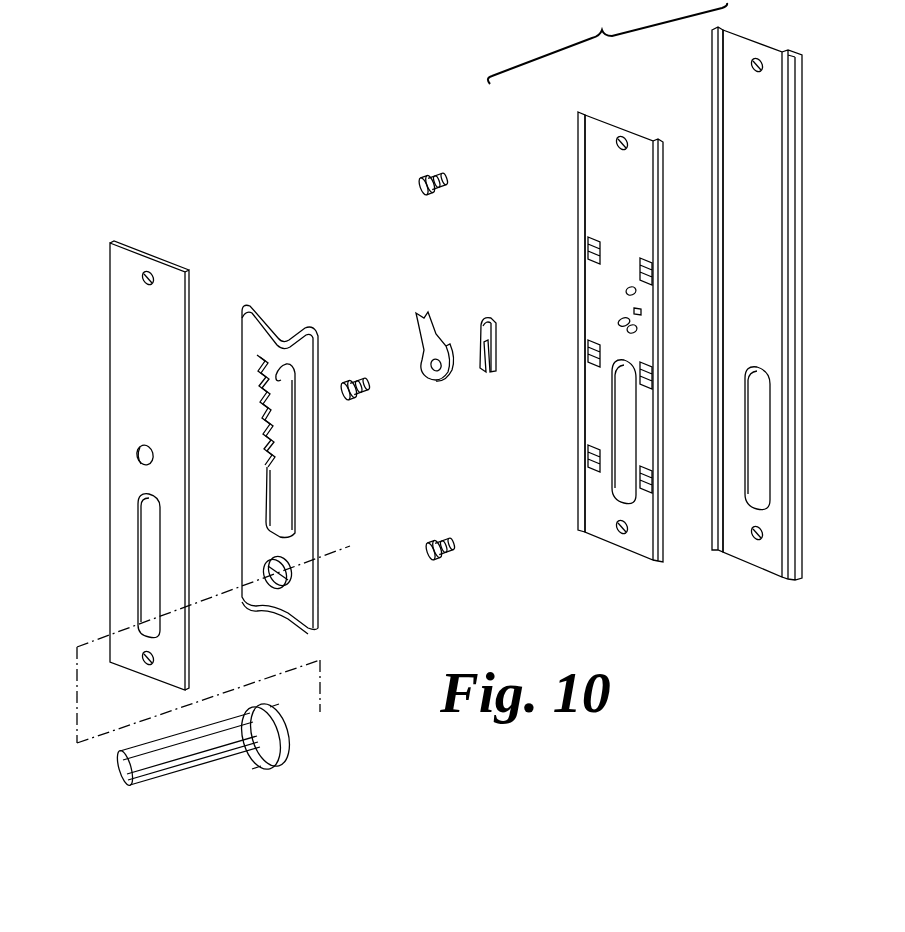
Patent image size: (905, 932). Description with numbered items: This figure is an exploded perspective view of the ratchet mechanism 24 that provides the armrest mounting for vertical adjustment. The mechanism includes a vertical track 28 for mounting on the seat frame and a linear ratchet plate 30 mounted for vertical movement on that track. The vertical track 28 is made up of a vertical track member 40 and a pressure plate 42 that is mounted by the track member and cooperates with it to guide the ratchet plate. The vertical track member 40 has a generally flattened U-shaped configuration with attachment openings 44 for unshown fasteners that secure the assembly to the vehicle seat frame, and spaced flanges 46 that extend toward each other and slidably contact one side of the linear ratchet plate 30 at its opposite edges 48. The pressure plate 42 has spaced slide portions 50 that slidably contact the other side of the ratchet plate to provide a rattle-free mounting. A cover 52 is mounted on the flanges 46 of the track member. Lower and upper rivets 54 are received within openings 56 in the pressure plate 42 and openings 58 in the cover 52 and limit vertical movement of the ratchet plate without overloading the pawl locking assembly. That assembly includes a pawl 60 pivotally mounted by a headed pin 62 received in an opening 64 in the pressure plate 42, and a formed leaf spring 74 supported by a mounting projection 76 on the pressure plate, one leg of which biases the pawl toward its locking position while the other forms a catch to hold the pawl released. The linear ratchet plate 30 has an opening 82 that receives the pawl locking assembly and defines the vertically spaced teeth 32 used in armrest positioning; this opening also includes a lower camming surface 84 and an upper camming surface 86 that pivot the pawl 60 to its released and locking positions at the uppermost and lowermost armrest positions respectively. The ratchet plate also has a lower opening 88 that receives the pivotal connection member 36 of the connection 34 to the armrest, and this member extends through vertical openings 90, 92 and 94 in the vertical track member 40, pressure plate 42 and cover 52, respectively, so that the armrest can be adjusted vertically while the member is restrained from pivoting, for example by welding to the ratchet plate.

The ratchet mechanism 24 is at (316, 150).
The vertical track 28 is at (607, 43).
The linear ratchet plate 30 is at (277, 436).
The vertically spaced teeth 32 is at (262, 411).
The connection 34 is at (224, 773).
The pivotal connection member 36 is at (192, 770).
The vertical track member 40 is at (766, 303).
The pressure plate 42 is at (613, 333).
The attachment openings 44 is at (754, 70).
The spaced flanges 46 is at (718, 46).
The opposite edges 48 is at (240, 525).
The spaced slide portions 50 is at (645, 272).
The cover 52 is at (116, 461).
The lower and upper rivets 54 is at (430, 177).
The openings 56 is at (616, 137).
The openings 58 is at (142, 272).
The pawl 60 is at (464, 380).
The headed pin 62 is at (359, 376).
The opening 64 is at (618, 322).
The formed leaf spring 74 is at (474, 298).
The mounting projection 76 is at (637, 329).
The opening 82 is at (287, 432).
The lower camming surface 84 is at (262, 465).
The upper camming surface 86 is at (285, 371).
The lower opening 88 is at (291, 585).
The vertical opening 90 is at (758, 442).
The vertical opening 92 is at (615, 425).
The vertical opening 94 is at (143, 568).